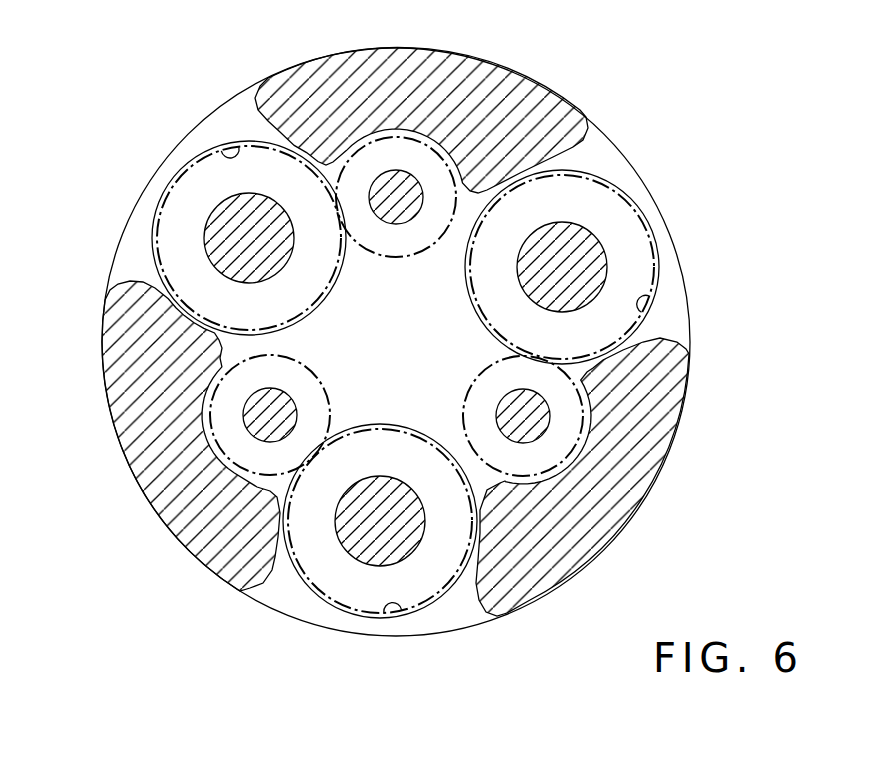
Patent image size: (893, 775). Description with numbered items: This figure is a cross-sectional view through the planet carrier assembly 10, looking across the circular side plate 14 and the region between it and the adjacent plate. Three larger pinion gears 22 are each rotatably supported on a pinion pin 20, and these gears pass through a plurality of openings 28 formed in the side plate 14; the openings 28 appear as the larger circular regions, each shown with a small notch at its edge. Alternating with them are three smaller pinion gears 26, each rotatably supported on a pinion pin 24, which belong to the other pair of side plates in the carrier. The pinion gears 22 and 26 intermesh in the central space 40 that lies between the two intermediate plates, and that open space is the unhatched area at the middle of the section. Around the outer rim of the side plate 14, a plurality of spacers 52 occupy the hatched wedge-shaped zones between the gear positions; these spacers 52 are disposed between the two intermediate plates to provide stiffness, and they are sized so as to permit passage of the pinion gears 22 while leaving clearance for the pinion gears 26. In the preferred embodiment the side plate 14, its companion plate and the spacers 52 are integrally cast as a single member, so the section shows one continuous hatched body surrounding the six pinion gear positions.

The planet carrier assembly 10 is at (632, 124).
The side plate 14 is at (684, 329).
The pinion pins 20 is at (225, 245).
The pinion gears 22 is at (168, 193).
The pinion pins 24 is at (393, 182).
The pinion gears 26 is at (375, 140).
The openings 28 is at (224, 146).
The central space 40 is at (412, 356).
The spacers 52 is at (306, 89).